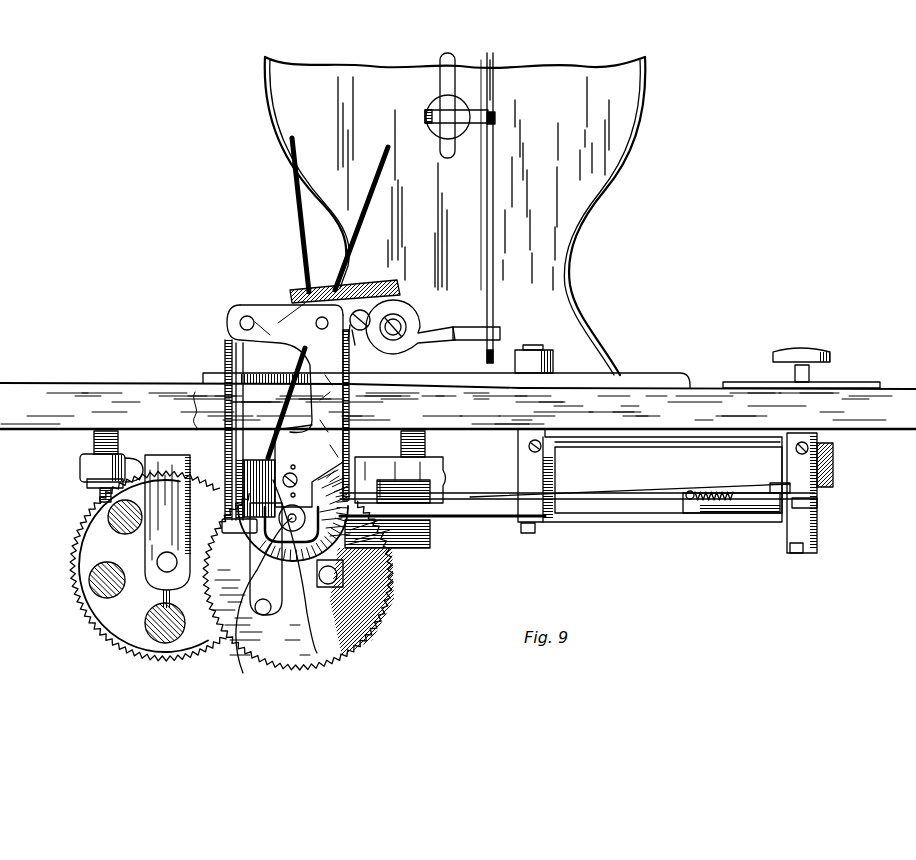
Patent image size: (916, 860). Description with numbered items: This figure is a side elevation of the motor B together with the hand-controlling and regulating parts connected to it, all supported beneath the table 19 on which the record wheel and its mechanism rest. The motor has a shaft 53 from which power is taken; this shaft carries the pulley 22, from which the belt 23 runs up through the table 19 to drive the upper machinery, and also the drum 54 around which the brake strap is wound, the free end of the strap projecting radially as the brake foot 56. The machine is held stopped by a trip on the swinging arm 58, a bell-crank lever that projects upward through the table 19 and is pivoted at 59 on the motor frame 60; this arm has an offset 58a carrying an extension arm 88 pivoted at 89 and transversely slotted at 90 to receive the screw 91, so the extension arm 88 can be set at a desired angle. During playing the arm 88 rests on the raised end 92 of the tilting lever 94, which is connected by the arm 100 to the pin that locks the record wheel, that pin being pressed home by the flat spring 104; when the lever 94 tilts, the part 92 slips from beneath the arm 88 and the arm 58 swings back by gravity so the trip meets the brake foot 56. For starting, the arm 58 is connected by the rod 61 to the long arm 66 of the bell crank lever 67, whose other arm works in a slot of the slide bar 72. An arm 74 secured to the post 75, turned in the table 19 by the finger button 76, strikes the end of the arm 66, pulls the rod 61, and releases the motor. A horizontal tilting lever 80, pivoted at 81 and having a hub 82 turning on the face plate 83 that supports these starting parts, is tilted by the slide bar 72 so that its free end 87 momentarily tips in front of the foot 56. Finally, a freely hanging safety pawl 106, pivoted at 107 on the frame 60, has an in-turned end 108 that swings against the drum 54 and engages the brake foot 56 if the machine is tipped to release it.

The flat spring 104 is at (440, 62).
The arm 100 is at (477, 110).
The tilting lever 94 is at (494, 80).
The belt 23 is at (300, 262).
The offset 58a is at (392, 288).
The pivot 59 is at (317, 320).
The pivot 107 is at (241, 321).
The motor frame 60 is at (255, 337).
The freely hanging arm or pawl 106 is at (228, 395).
The in-turned end 108 is at (225, 524).
The swinging arm 58 is at (349, 455).
The extension arm 88 is at (447, 330).
The pivot 89 is at (362, 332).
The transverse slot 90 is at (395, 338).
The screw 91 is at (404, 324).
The raised end 92 is at (495, 332).
The table 19 is at (707, 388).
The finger piece or button 76 is at (818, 350).
The protruding end of brake strap 56 is at (430, 540).
The free end of tilting lever 87 is at (352, 547).
The drum 54 is at (376, 554).
The pulley 22 is at (312, 642).
The motor shaft 53 is at (289, 587).
The motor B is at (148, 575).
The rod 61 is at (445, 495).
The tilting lever 80 is at (573, 517).
The hub 82 is at (541, 470).
The face plate 83 is at (617, 441).
The pivot 81 is at (537, 533).
The slide bar 72 is at (748, 512).
The arm 74 is at (776, 481).
The post 75 is at (834, 468).
The long arm 66 is at (818, 505).
The bell crank lever 67 is at (820, 547).